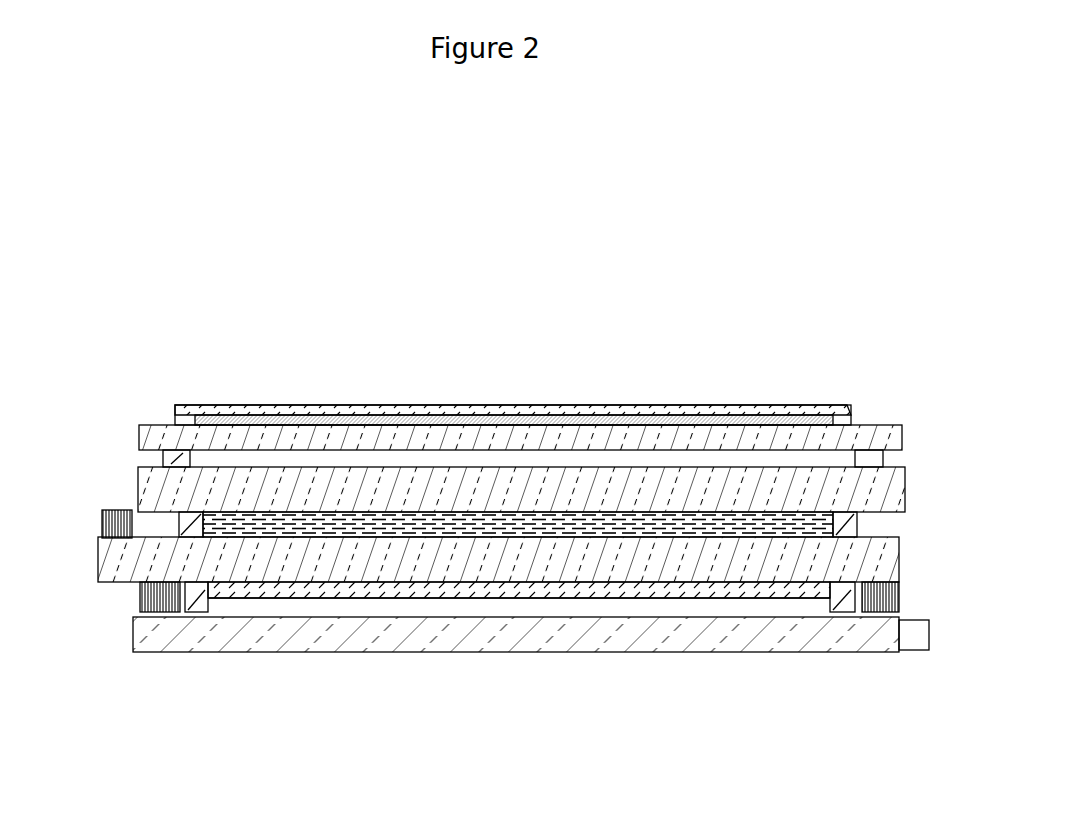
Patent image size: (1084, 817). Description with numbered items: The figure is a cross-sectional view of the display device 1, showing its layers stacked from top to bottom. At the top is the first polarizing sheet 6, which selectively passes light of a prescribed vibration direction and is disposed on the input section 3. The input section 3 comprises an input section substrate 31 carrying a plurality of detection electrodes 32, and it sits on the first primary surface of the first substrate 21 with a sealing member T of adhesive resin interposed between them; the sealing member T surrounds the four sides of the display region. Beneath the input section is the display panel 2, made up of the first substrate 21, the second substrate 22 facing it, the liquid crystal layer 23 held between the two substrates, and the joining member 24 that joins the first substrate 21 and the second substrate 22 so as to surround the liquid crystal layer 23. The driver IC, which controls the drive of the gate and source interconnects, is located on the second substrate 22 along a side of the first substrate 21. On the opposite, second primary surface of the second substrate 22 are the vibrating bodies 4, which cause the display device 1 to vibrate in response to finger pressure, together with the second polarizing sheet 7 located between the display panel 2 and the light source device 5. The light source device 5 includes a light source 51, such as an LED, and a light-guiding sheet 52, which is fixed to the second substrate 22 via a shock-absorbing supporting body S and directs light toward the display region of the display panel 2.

The display device 1 is at (514, 252).
The display panel 2 is at (86, 467).
The input section 3 is at (86, 405).
The vibrating bodies 4 is at (160, 612).
The light source device 5 is at (913, 712).
The first polarizing sheet 6 is at (376, 412).
The second polarizing sheet 7 is at (300, 592).
The first substrate 21 is at (587, 510).
The second substrate 22 is at (380, 605).
The liquid crystal layer 23 is at (765, 525).
The joining member 24 is at (840, 530).
The input section substrate 31 is at (307, 413).
The detection electrodes 32 is at (473, 423).
The light source 51 is at (915, 643).
The light-guiding sheet 52 is at (870, 630).
The driver IC is at (114, 525).
The sealing member T is at (174, 460).
The shock-absorbing supporting body S is at (195, 612).